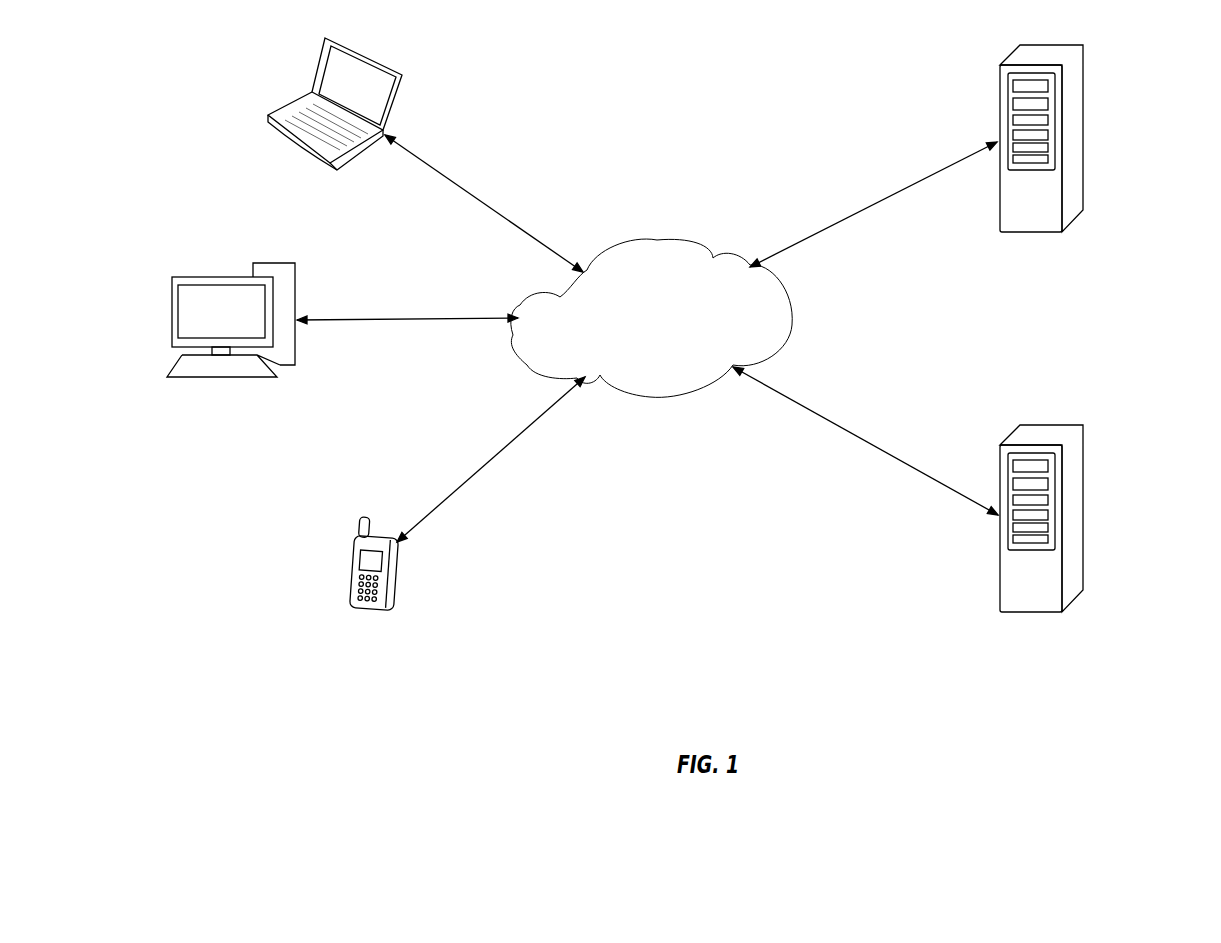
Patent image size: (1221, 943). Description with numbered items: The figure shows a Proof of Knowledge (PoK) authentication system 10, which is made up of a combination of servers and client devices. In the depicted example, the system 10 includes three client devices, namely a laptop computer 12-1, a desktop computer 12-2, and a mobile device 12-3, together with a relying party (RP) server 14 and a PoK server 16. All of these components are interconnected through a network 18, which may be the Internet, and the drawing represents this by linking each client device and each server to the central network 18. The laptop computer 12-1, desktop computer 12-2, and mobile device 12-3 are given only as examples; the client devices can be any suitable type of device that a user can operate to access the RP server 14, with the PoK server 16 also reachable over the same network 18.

The PoK authentication system 10 is at (700, 95).
The laptop computer 12-1 is at (323, 130).
The desktop computer 12-2 is at (230, 352).
The mobile device 12-3 is at (373, 594).
The RP server 14 is at (1030, 164).
The PoK server 16 is at (1031, 544).
The network 18 is at (643, 350).